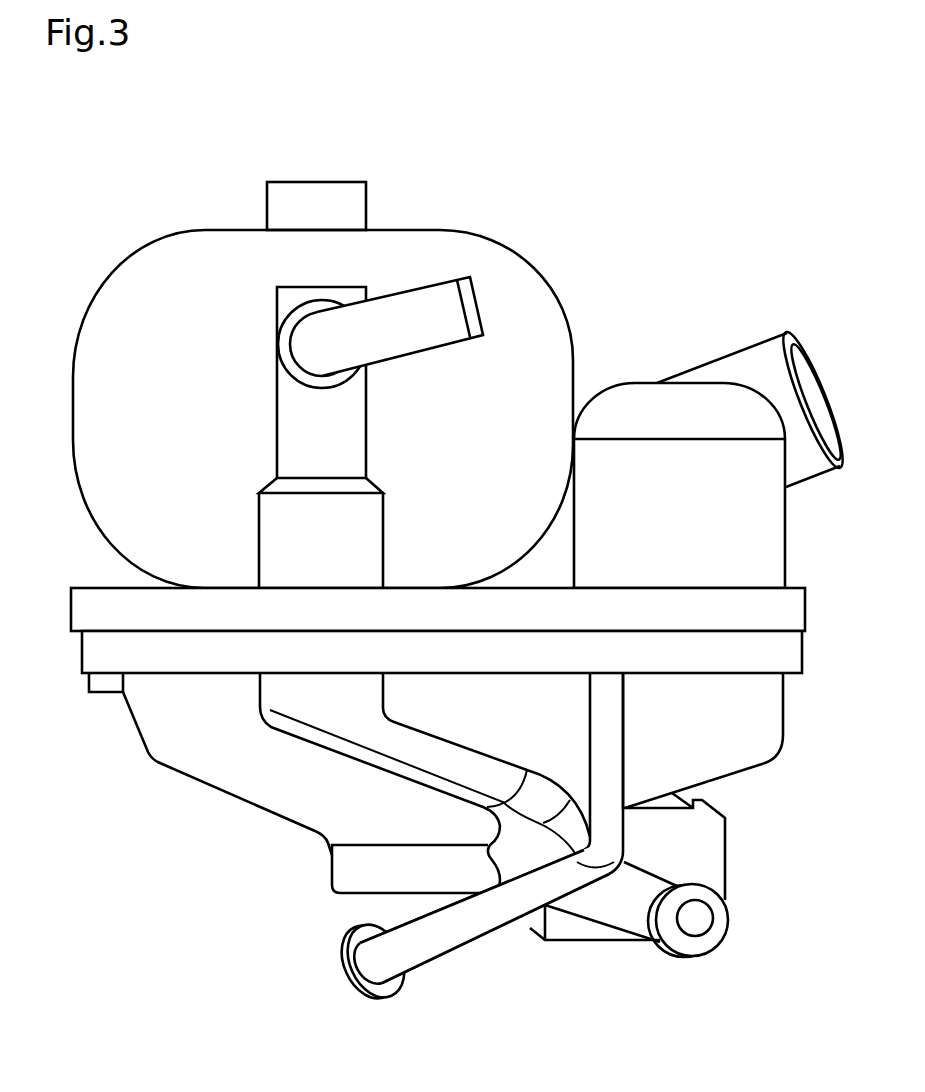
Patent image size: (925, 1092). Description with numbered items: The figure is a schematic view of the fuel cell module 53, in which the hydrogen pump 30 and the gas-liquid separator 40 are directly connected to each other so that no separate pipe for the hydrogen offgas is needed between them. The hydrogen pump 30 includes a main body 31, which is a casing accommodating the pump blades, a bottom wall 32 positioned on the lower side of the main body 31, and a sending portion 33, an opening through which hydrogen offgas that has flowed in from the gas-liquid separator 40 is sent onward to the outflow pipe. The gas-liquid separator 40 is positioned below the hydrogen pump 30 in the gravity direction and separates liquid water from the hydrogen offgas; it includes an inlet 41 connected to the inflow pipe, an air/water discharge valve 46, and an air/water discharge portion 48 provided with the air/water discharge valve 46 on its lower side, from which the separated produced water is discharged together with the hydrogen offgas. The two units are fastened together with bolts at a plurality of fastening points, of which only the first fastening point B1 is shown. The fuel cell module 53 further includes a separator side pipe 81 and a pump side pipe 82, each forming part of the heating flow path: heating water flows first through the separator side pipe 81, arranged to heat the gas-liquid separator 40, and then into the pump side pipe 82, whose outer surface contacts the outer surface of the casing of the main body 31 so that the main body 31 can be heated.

The hydrogen pump 30 is at (529, 214).
The main body 31 is at (205, 228).
The bottom wall 32 is at (70, 610).
The sending portion 33 is at (308, 181).
The gas-liquid separator 40 is at (143, 778).
The inlet 41 is at (806, 350).
The air/water discharge valve 46 is at (727, 863).
The air/water discharge portion 48 is at (661, 946).
The fuel cell module 53 is at (710, 156).
The separator side pipe 81 is at (415, 968).
The pump side pipe 82 is at (402, 292).
The first fastening point B1 is at (103, 693).